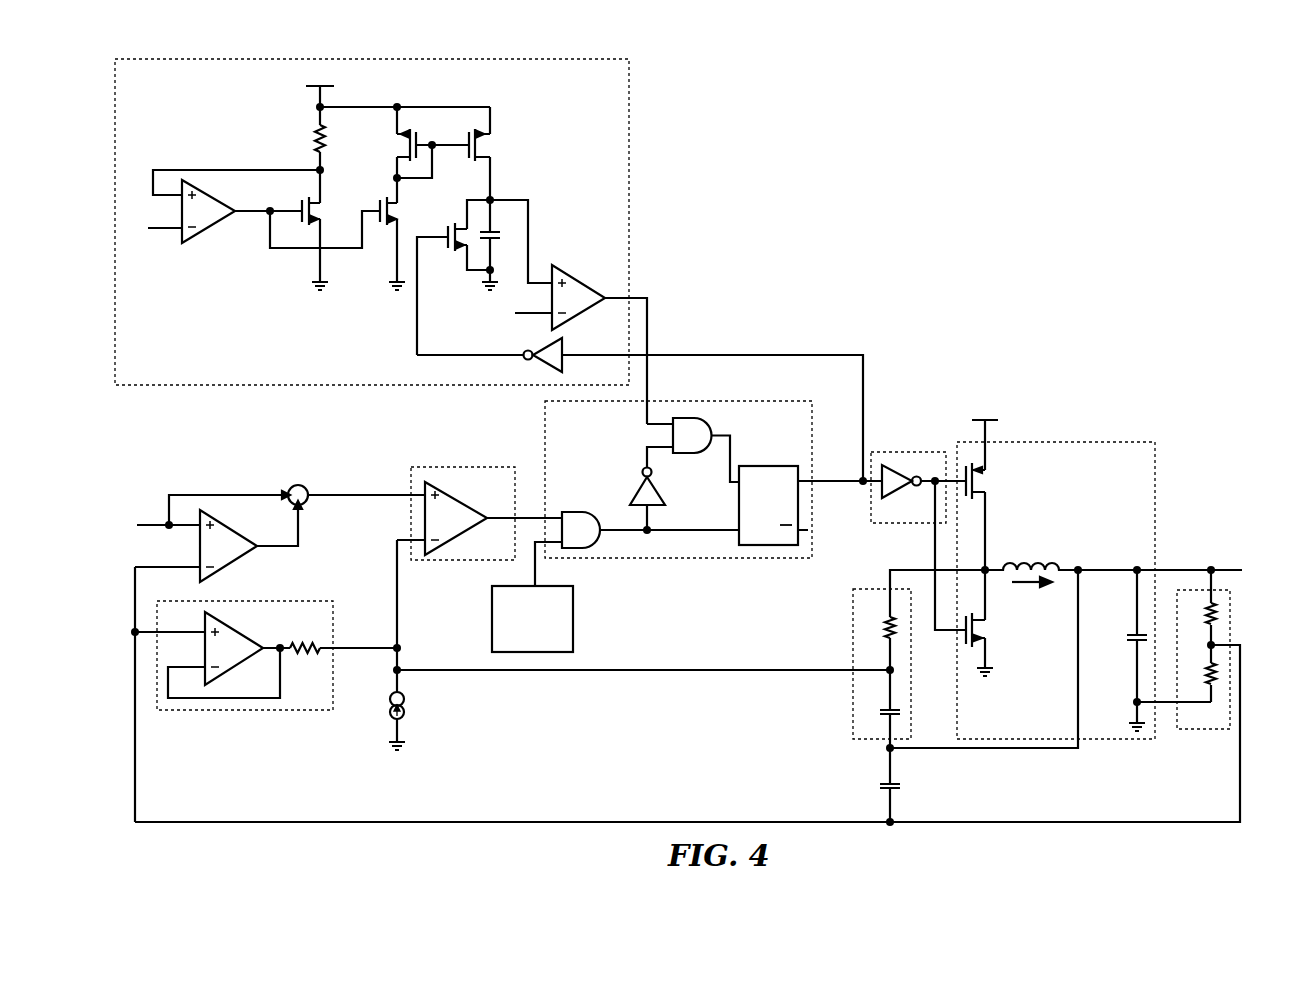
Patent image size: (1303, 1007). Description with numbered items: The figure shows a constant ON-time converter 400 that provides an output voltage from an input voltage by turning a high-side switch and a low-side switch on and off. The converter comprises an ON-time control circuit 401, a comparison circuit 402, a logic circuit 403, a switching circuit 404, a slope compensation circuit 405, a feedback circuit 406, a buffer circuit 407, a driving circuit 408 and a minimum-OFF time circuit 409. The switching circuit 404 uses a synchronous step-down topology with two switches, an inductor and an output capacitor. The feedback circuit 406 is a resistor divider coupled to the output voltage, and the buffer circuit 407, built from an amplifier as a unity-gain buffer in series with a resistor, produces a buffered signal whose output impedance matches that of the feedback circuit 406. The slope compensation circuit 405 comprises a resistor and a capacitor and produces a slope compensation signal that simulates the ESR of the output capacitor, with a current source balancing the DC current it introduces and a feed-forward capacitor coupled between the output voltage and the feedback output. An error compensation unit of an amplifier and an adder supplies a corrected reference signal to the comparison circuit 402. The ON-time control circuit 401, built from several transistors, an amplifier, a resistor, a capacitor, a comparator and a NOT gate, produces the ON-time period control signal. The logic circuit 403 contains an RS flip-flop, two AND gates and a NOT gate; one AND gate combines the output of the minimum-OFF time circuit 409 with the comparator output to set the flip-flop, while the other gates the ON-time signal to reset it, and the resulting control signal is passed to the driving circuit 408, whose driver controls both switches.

The constant ON-time converter 400 is at (1012, 103).
The ON-time control circuit 401 is at (630, 171).
The comparison circuit 402 is at (454, 562).
The logic circuit 403 is at (690, 562).
The switching circuit 404 is at (1152, 456).
The slope compensation circuit 405 is at (853, 718).
The feedback circuit 406 is at (1203, 730).
The buffer circuit 407 is at (246, 712).
The driving circuit 408 is at (908, 522).
The minimum-OFF time circuit 409 is at (490, 612).